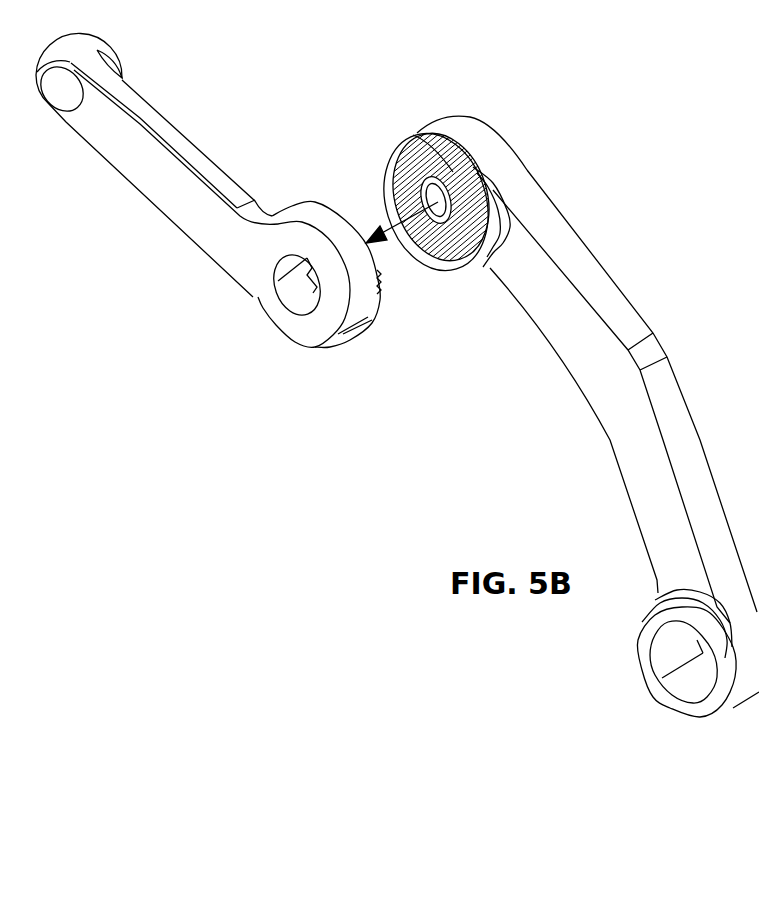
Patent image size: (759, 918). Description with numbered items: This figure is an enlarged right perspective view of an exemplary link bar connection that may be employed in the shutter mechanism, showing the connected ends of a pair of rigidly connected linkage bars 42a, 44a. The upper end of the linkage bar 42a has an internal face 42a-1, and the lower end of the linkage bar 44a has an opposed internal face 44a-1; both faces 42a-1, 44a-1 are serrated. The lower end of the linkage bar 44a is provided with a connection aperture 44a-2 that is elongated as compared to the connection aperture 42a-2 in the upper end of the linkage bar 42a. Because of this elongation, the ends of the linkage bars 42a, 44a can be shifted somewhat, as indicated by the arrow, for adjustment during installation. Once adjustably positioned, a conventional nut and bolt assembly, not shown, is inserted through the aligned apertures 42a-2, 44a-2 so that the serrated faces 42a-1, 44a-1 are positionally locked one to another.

The linkage bar 42a is at (582, 328).
The internal face of linkage bar 42a-1 is at (456, 172).
The connection aperture 42a-2 is at (382, 175).
The linkage bar 44a is at (271, 208).
The internal face of linkage bar 44a-1 is at (383, 290).
The connection aperture 44a-2 is at (295, 287).